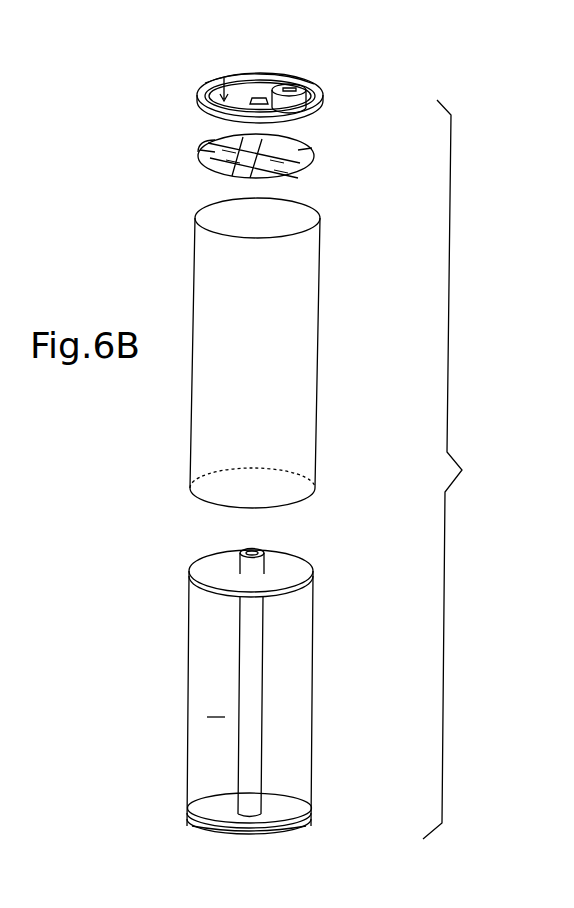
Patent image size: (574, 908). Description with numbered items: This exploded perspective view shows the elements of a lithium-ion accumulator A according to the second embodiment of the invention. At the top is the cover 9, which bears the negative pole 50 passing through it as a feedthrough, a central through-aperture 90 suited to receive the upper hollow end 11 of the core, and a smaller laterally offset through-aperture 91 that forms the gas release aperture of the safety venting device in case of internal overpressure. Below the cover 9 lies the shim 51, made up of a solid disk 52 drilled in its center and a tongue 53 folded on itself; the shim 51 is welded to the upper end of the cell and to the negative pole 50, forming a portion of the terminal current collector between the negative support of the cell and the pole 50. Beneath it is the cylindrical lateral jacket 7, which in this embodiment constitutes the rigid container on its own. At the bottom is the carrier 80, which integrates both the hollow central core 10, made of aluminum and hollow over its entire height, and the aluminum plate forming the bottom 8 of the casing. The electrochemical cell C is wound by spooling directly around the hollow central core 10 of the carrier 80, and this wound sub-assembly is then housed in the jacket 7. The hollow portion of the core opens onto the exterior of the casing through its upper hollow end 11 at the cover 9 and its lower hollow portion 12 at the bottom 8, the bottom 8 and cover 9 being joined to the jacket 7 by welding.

The cover 9 is at (224, 98).
The central through-aperture 90 is at (261, 98).
The through-aperture 91 is at (220, 82).
The negative pole 50 is at (300, 100).
The shim 51 is at (318, 135).
The solid disk 52 is at (222, 140).
The tongue 53 is at (307, 147).
The cylindrical lateral jacket 7 is at (318, 278).
The upper hollow end 11 is at (252, 565).
The hollow central core 10 is at (253, 668).
The carrier 80 is at (222, 710).
The bottom 8 is at (216, 818).
The hollow portion 12 is at (248, 814).
The lithium-ion accumulator A is at (454, 469).
The electrochemical cell C is at (216, 705).